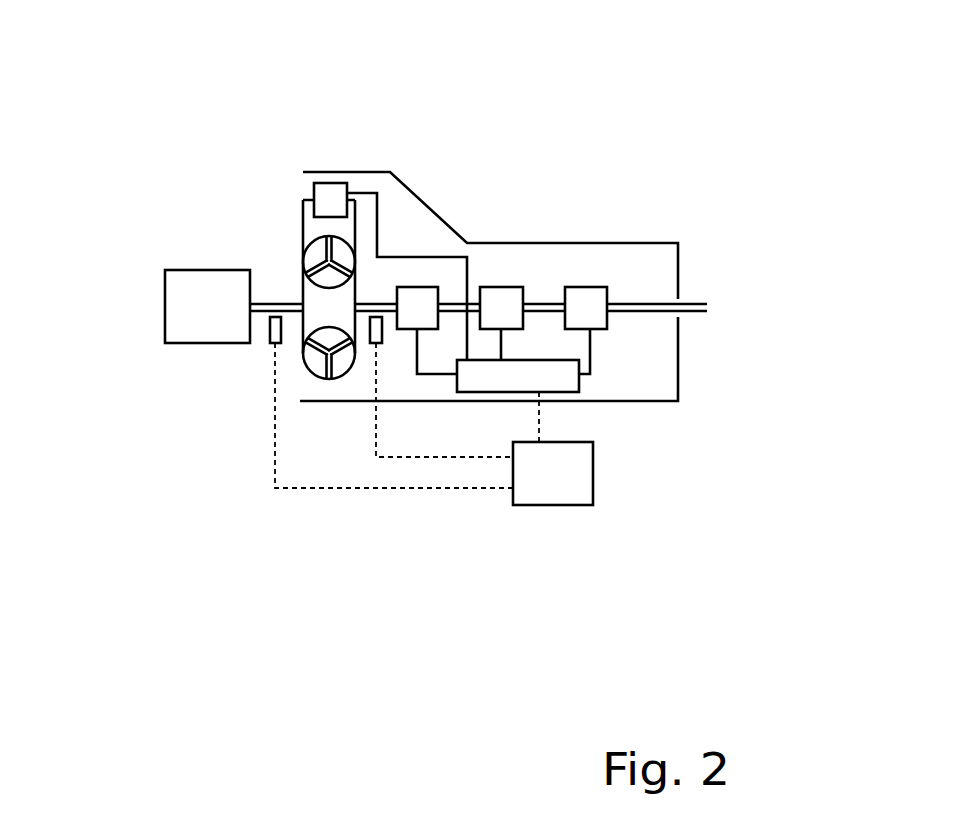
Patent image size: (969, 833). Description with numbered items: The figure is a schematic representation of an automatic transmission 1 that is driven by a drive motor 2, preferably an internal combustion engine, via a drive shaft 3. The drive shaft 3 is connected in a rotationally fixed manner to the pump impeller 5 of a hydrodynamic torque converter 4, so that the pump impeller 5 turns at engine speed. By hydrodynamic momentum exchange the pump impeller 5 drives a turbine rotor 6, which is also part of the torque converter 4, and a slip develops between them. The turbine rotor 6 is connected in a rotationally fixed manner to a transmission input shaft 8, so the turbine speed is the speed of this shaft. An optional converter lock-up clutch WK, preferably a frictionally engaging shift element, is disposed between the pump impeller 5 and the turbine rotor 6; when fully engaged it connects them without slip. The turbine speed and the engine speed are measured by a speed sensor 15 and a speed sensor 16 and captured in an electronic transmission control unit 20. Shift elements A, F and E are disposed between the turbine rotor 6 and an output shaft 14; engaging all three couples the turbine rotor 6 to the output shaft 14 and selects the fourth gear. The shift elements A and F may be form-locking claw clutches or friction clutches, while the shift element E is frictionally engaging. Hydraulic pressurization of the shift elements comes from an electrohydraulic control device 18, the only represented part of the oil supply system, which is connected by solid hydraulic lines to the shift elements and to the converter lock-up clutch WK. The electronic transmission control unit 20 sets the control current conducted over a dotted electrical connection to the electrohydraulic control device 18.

The automatic transmission 1 is at (662, 150).
The drive motor 2 is at (190, 278).
The drive shaft 3 is at (276, 303).
The hydrodynamic torque converter 4 is at (300, 195).
The converter lock-up clutch WK is at (328, 200).
The pump impeller 5 is at (315, 360).
The turbine rotor 6 is at (340, 362).
The transmission input shaft 8 is at (377, 303).
The shift element A is at (417, 305).
The shift element F is at (498, 305).
The shift element E is at (580, 305).
The output shaft 14 is at (690, 307).
The speed sensor 15 is at (270, 343).
The speed sensor 16 is at (382, 343).
The electrohydraulic control device 18 is at (507, 392).
The electronic transmission control unit 20 is at (545, 497).